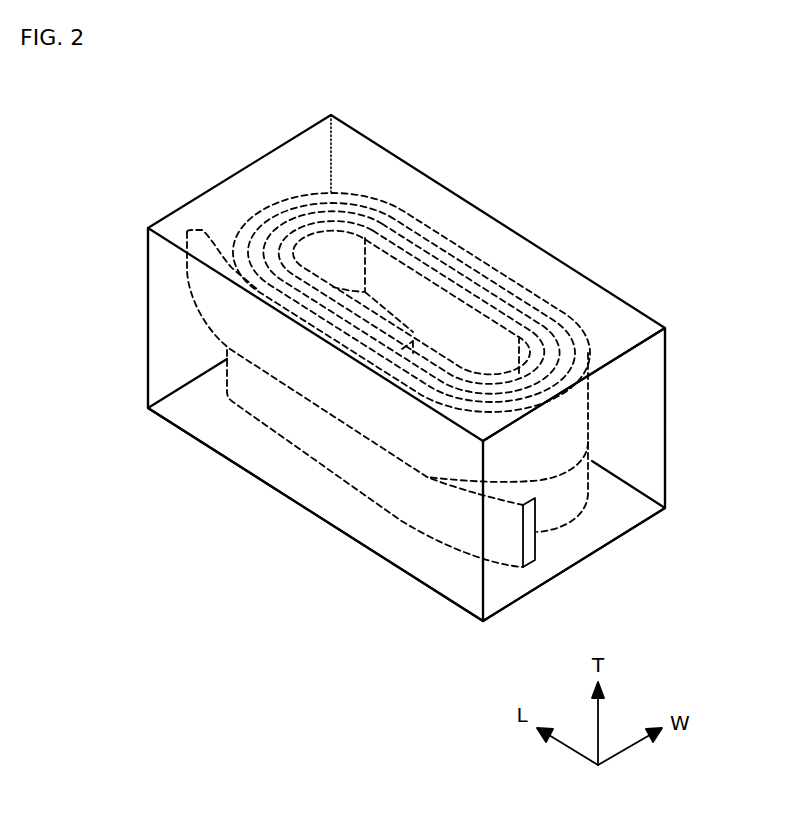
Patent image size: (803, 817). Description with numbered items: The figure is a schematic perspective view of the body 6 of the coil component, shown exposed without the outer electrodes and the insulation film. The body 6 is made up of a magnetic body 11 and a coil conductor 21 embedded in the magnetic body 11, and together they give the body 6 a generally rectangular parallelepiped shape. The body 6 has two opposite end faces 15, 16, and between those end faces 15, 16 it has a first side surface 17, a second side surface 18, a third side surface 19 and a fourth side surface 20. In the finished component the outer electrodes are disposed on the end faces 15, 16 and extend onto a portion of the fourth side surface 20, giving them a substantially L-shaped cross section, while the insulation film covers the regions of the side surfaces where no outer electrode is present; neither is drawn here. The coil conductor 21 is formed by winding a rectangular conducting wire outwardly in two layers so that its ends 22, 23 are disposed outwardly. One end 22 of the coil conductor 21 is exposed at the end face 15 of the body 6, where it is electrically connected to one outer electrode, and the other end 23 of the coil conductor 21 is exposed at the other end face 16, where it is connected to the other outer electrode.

The body 6 is at (601, 160).
The magnetic body 11 is at (445, 197).
The end face 15 is at (640, 413).
The end face 16 is at (238, 194).
The first side surface 17 is at (237, 445).
The second side surface 18 is at (308, 490).
The third side surface 19 is at (600, 307).
The fourth side surface 20 is at (553, 278).
The coil conductor 21 is at (483, 254).
The end of the coil conductor 22 is at (532, 538).
The other end of the coil conductor 23 is at (187, 268).